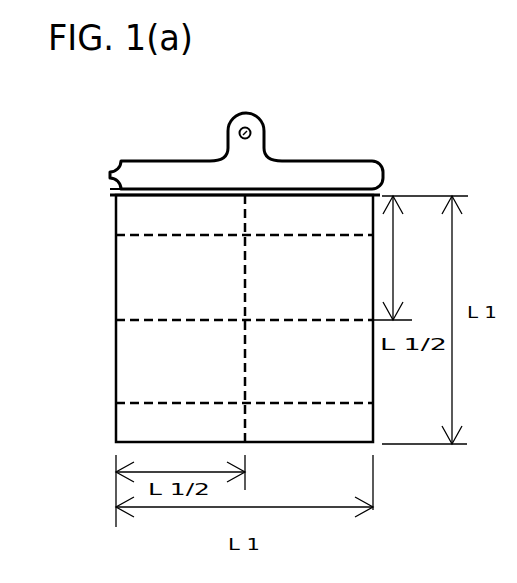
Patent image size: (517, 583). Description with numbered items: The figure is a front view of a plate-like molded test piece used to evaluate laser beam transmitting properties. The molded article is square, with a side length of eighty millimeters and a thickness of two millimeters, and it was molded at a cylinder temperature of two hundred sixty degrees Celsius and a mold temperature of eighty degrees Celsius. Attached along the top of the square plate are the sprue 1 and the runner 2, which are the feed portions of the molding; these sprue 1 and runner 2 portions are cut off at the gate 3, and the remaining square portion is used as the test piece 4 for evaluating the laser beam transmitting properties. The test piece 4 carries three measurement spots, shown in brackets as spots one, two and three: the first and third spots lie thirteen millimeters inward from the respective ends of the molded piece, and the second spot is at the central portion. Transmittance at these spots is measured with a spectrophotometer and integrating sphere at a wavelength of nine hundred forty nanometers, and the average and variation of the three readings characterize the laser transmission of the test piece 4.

The sprue 1 is at (252, 128).
The runner 2 is at (323, 177).
The gate 3 is at (112, 183).
The test piece for evaluating laser beam transmitting properties 4 is at (343, 432).